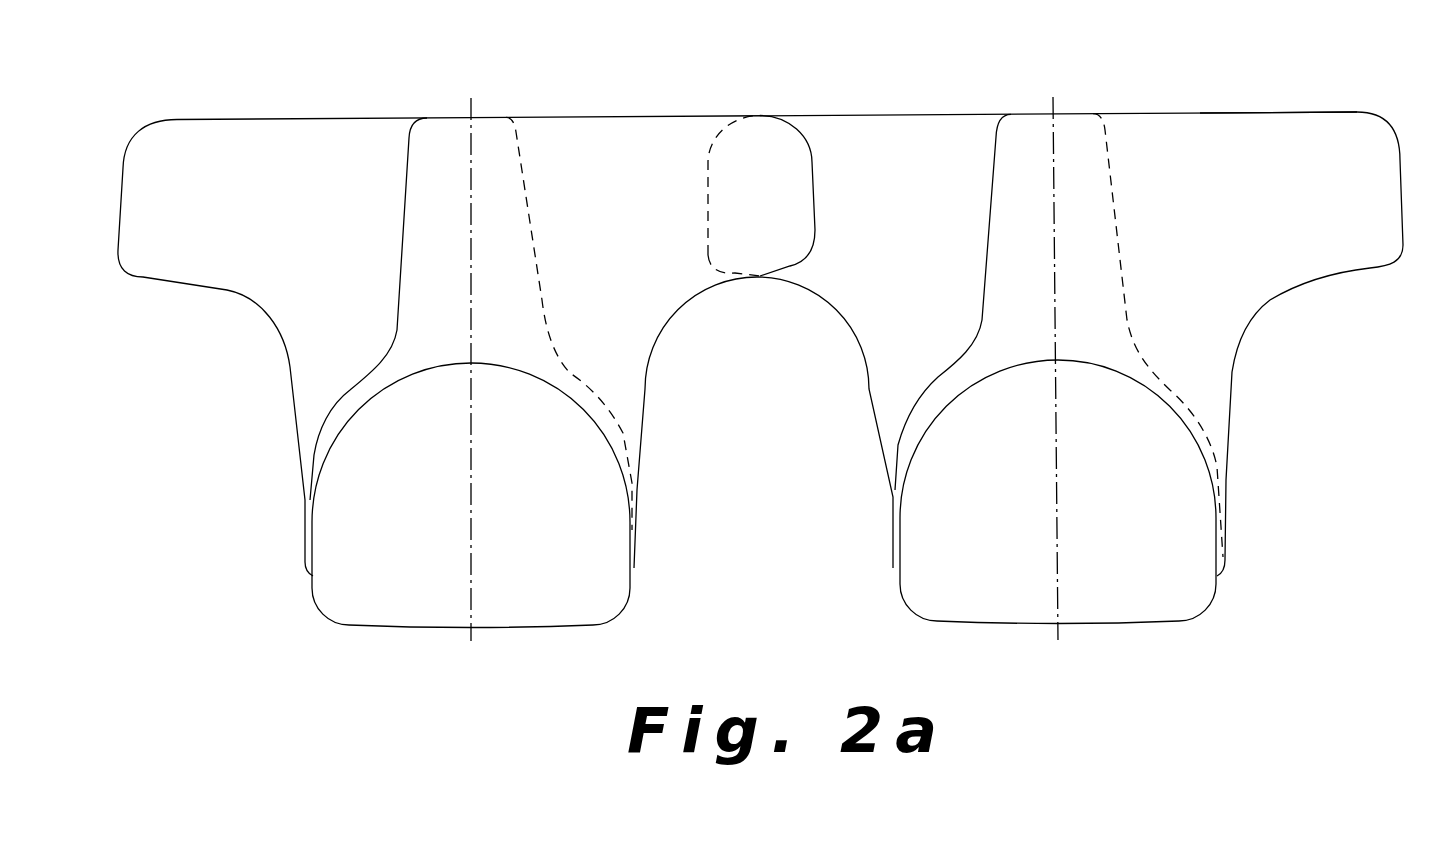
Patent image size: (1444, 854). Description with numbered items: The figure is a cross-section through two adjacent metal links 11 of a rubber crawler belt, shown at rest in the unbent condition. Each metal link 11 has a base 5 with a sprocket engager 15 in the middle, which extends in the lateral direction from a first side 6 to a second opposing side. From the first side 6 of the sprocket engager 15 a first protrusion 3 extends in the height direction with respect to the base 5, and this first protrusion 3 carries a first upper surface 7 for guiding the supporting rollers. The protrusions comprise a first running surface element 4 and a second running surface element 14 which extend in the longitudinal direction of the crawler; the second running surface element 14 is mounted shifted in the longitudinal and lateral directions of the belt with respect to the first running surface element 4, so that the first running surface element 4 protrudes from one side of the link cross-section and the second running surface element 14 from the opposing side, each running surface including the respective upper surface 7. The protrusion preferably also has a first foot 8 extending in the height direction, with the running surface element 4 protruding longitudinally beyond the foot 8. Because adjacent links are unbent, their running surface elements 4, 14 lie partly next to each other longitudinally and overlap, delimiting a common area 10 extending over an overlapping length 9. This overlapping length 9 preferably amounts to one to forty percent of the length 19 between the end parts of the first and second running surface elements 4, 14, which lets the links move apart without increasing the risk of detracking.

The first protrusion 3 is at (1082, 310).
The first running surface element 4 is at (912, 115).
The base 5 is at (1095, 572).
The first side 6 is at (1112, 453).
The first upper surface 7 is at (1073, 114).
The first foot 8 is at (1098, 343).
The overlapping length 9 is at (708, 227).
The common area 10 is at (786, 175).
The metal link 11 is at (1305, 312).
The second running surface element 14 is at (1273, 112).
The sprocket engager 15 is at (1133, 525).
The length 19 is at (708, 202).